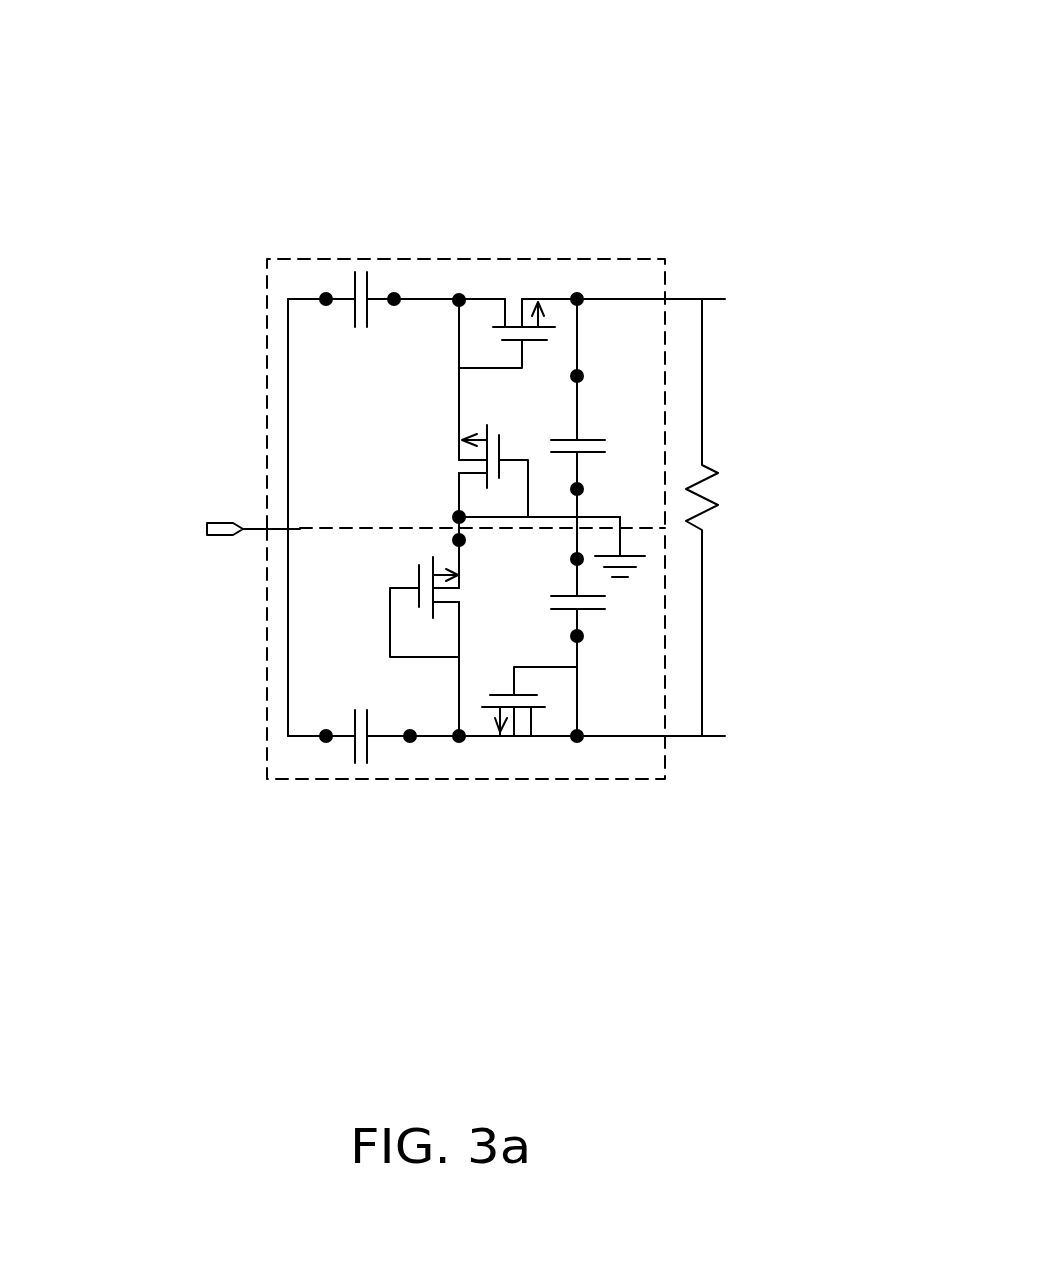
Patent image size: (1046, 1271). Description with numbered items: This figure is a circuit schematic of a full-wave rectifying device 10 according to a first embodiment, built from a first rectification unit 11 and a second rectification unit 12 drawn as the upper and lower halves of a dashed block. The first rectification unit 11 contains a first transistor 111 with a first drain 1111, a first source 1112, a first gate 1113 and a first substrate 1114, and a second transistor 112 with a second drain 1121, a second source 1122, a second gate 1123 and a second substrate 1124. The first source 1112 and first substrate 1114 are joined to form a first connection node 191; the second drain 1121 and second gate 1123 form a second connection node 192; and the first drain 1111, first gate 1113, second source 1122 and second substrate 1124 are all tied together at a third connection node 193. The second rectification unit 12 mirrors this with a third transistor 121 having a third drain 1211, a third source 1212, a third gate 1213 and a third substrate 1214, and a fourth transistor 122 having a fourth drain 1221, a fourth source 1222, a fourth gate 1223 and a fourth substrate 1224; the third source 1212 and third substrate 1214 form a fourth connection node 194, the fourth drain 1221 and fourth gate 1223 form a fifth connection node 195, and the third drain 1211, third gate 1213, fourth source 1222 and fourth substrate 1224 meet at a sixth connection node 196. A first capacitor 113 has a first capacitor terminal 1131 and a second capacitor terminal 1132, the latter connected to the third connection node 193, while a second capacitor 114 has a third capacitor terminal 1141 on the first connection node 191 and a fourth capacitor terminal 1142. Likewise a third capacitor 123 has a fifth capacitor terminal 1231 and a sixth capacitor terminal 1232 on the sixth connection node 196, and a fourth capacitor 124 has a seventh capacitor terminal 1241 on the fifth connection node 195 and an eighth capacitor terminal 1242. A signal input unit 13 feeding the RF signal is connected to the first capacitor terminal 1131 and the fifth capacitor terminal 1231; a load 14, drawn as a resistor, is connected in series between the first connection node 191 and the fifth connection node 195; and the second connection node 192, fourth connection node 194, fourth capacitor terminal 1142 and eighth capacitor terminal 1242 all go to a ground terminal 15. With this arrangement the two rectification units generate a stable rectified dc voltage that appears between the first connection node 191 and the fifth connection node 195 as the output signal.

The full-wave rectifying device 10 is at (712, 72).
The first rectification unit 11 is at (428, 259).
The second rectification unit 12 is at (267, 745).
The signal input unit 13 is at (152, 524).
The load 14 is at (747, 512).
The ground terminal 15 is at (615, 517).
The first transistor 111 is at (553, 222).
The first drain 1111 is at (505, 318).
The first source 1112 is at (591, 250).
The first gate 1113 is at (520, 355).
The first substrate 1114 is at (522, 320).
The second transistor 112 is at (360, 439).
The second drain 1121 is at (470, 474).
The second source 1122 is at (460, 440).
The second gate 1123 is at (518, 460).
The second substrate 1124 is at (470, 460).
The first capacitor 113 is at (299, 216).
The first capacitor terminal 1131 is at (326, 296).
The second capacitor terminal 1132 is at (394, 296).
The second capacitor 114 is at (728, 407).
The third capacitor terminal 1141 is at (580, 375).
The fourth capacitor terminal 1142 is at (580, 490).
The third transistor 121 is at (269, 632).
The third drain 1211 is at (440, 602).
The third source 1212 is at (440, 576).
The third gate 1213 is at (408, 588).
The third substrate 1214 is at (440, 588).
The fourth transistor 122 is at (532, 853).
The fourth drain 1221 is at (532, 713).
The fourth source 1222 is at (495, 712).
The fourth gate 1223 is at (518, 683).
The fourth substrate 1224 is at (512, 710).
The third capacitor 123 is at (323, 798).
The fifth capacitor terminal 1231 is at (326, 742).
The sixth capacitor terminal 1232 is at (410, 742).
The fourth capacitor 124 is at (715, 615).
The seventh capacitor terminal 1241 is at (580, 640).
The eighth capacitor terminal 1242 is at (580, 562).
The first connection node 191 is at (578, 297).
The second connection node 192 is at (455, 516).
The third connection node 193 is at (460, 298).
The fourth connection node 194 is at (457, 540).
The fifth connection node 195 is at (577, 742).
The sixth connection node 196 is at (459, 742).